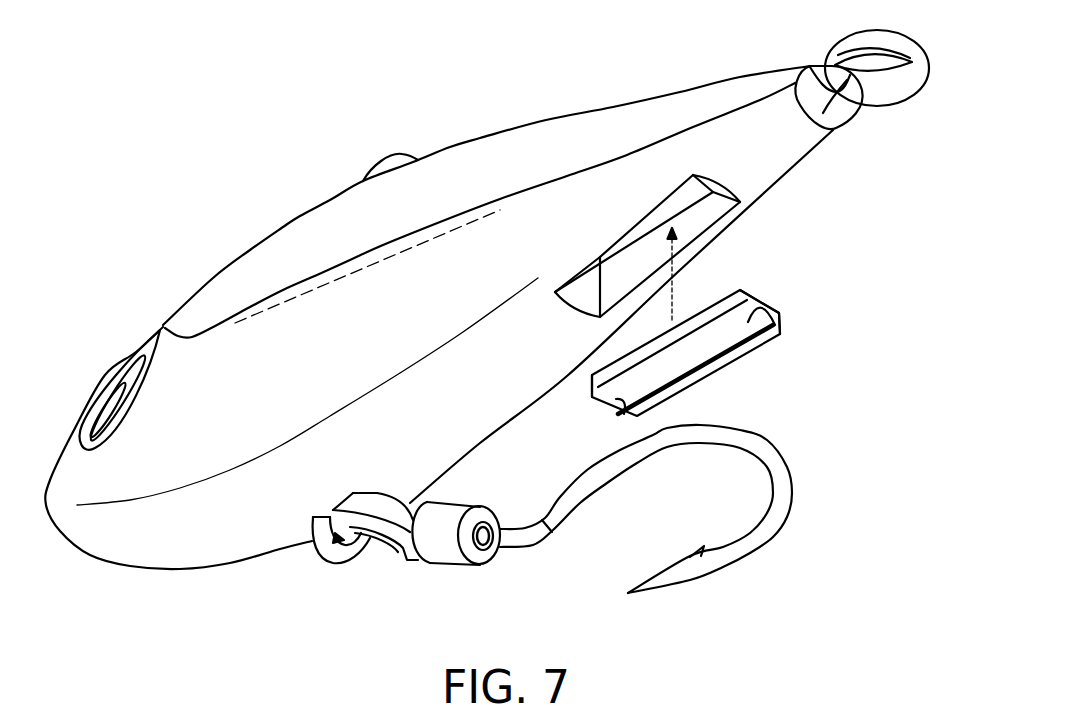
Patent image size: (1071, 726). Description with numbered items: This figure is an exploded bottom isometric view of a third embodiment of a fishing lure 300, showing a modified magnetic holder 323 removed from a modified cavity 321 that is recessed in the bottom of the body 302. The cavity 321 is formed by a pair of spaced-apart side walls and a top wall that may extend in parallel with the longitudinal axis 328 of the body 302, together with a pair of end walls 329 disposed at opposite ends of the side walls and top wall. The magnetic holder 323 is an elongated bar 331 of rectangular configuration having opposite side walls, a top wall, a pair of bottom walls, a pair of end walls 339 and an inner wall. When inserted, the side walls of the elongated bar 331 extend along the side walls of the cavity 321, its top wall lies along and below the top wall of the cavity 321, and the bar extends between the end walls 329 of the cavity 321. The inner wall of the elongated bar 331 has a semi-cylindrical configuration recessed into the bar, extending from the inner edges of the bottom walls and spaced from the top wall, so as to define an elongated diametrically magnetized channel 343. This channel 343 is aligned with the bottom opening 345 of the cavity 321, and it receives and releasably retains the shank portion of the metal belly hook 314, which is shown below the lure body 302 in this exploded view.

The fishing lure 300 is at (298, 155).
The body 302 is at (236, 569).
The metal belly hook 314 is at (770, 437).
The cavity 321 is at (702, 212).
The magnetic holder 323 is at (694, 350).
The longitudinal axis 328 is at (301, 297).
The end walls 329 is at (640, 259).
The elongated bar 331 is at (790, 334).
The end walls 339 is at (778, 312).
The elongated diametrically magnetized channel 343 is at (614, 412).
The bottom opening 345 is at (567, 300).